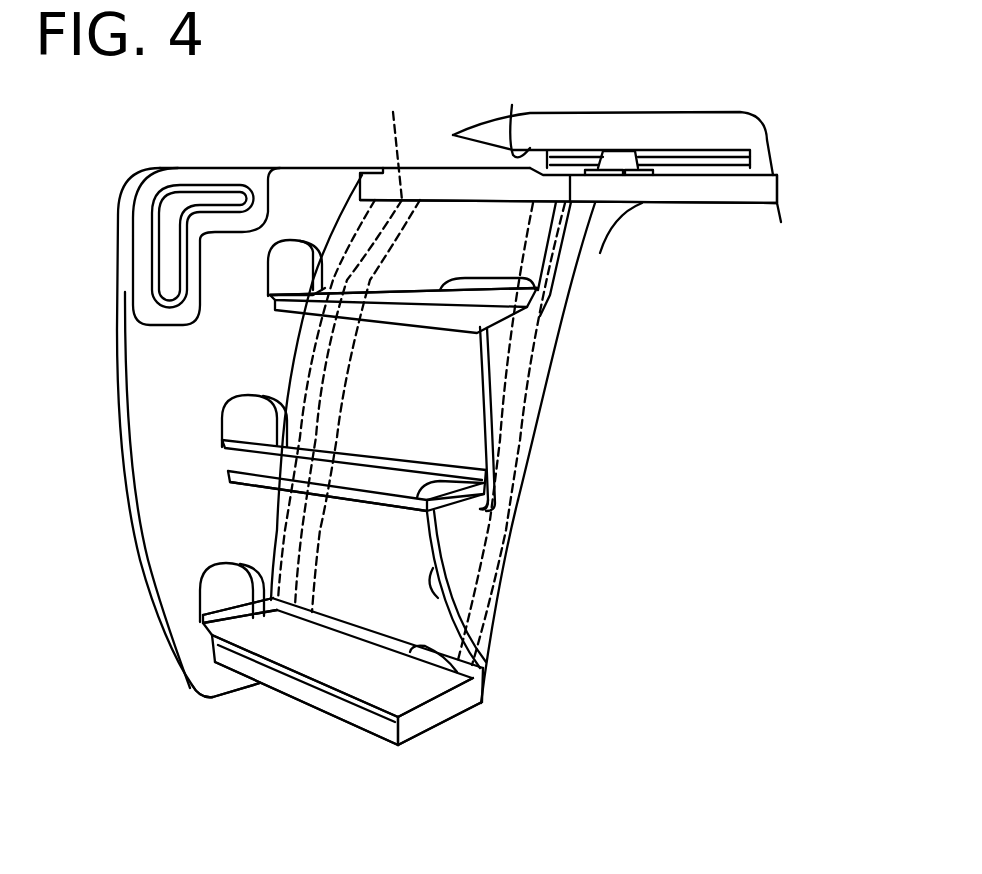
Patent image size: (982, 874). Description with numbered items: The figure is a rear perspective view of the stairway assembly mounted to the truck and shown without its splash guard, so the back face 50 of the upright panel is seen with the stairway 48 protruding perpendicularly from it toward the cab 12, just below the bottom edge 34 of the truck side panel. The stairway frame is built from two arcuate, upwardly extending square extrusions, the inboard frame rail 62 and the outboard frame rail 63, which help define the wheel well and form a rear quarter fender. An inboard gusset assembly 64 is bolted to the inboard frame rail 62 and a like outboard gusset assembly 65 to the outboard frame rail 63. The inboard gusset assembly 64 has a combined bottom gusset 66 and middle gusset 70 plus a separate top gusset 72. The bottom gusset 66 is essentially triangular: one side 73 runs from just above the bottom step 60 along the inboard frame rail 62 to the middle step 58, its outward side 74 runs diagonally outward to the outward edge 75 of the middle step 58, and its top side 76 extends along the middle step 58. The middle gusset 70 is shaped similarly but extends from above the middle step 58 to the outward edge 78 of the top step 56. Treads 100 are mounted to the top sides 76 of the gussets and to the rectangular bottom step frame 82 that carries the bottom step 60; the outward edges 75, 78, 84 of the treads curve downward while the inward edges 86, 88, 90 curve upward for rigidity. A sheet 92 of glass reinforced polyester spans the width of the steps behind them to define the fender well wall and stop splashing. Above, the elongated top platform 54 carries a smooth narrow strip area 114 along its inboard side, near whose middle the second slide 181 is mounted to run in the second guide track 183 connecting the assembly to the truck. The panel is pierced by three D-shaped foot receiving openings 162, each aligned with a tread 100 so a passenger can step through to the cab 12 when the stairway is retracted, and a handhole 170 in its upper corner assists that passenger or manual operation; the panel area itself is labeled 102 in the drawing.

The cab 12 is at (493, 126).
The bottom edge of the side panel 34 is at (511, 112).
The stairway 48 is at (288, 680).
The back face 50 is at (115, 368).
The top platform 54 is at (722, 188).
The top step 56 is at (497, 343).
The middle step 58 is at (490, 492).
The bottom step 60 is at (427, 703).
The inboard frame rail 62 is at (600, 253).
The outboard frame rail 63 is at (393, 136).
The inboard gusset assembly 64 is at (478, 390).
The outboard gusset assembly 65 is at (301, 352).
The bottom gusset 66 is at (485, 632).
The middle gusset 70 is at (503, 347).
The top gusset 72 is at (605, 203).
The side of the bottom gusset 73 is at (504, 567).
The outward side of the bottom gusset 74 is at (460, 597).
The outward edge of the middle step 75 is at (255, 490).
The top side of the bottom gusset 76 is at (473, 520).
The outward edge of the top step 78 is at (345, 294).
The bottom step frame 82 is at (260, 683).
The outward edge of the bottom step tread 84 is at (225, 624).
The inward edge of the bottom step tread 86 is at (480, 640).
The inward edge of the middle step tread 88 is at (430, 463).
The inward edge of the top step tread 90 is at (550, 288).
The sheet 92 is at (505, 222).
The tread 100 is at (383, 302).
The panel 102 is at (478, 247).
The narrow strip area 114 is at (693, 168).
The foot receiving opening 162 is at (267, 267).
The handhole 170 is at (213, 182).
The second slide 181 is at (618, 150).
The second guide track 183 is at (687, 148).